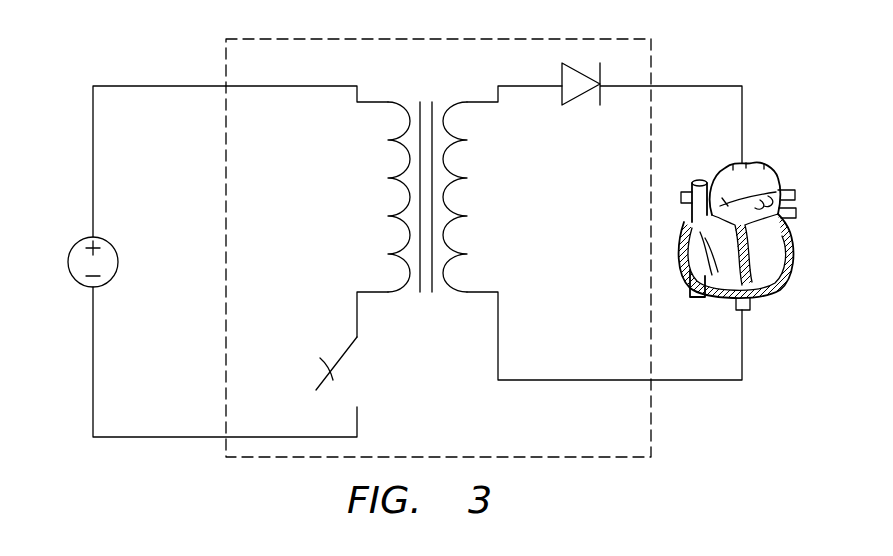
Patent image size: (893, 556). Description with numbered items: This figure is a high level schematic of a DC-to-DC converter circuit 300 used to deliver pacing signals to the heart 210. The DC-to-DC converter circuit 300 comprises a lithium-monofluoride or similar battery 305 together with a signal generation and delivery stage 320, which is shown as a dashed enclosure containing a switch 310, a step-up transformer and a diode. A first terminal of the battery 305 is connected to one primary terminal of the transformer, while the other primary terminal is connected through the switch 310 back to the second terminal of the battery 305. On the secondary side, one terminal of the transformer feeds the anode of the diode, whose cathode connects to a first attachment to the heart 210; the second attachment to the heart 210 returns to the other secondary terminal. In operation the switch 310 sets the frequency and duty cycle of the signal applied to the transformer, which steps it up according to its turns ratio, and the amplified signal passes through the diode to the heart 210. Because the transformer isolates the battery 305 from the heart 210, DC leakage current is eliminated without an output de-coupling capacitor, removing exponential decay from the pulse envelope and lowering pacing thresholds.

The DC-to-DC converter circuit 300 is at (172, 56).
The battery 305 is at (80, 238).
The switch 310 is at (352, 382).
The signal generation and delivery stage 320 is at (652, 60).
The heart 210 is at (776, 180).